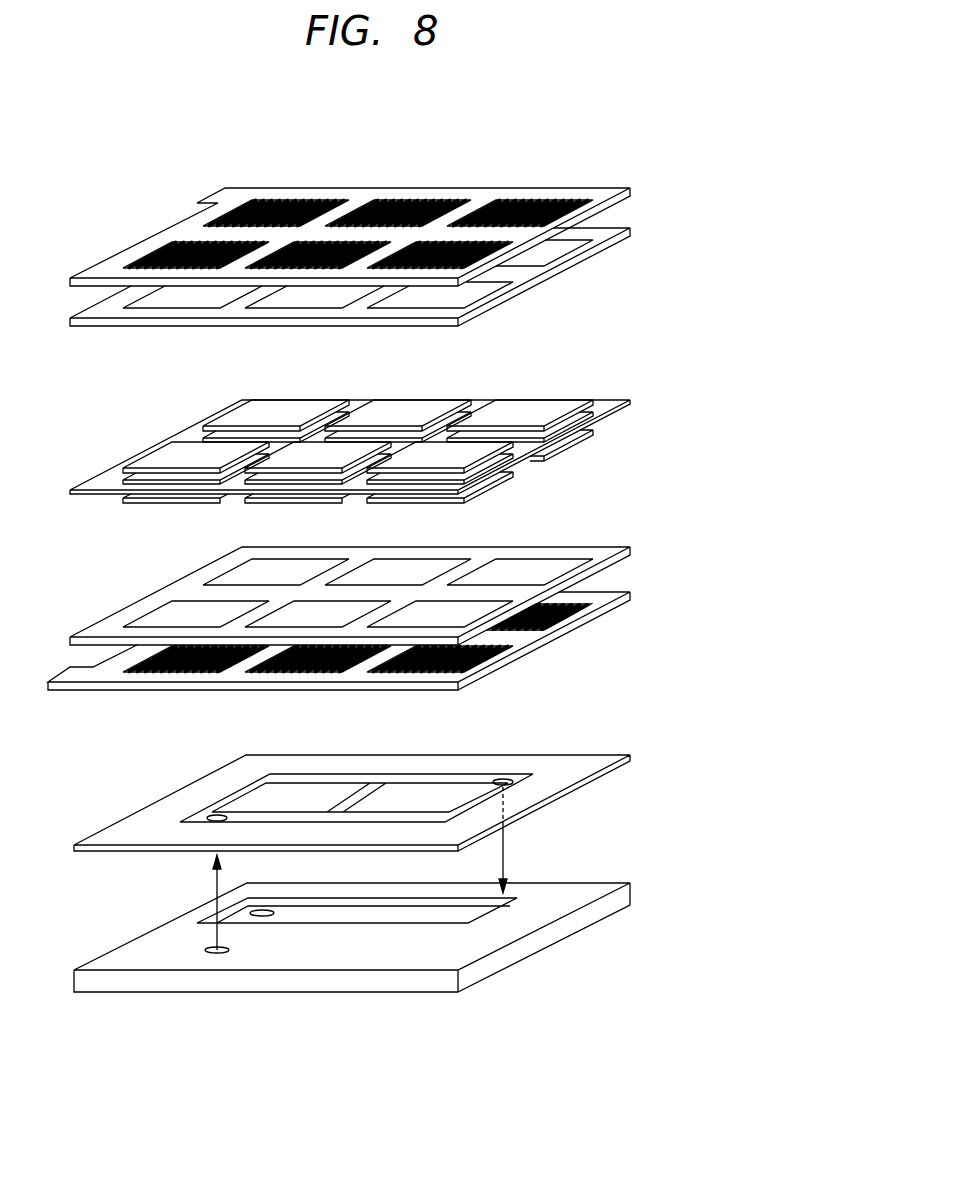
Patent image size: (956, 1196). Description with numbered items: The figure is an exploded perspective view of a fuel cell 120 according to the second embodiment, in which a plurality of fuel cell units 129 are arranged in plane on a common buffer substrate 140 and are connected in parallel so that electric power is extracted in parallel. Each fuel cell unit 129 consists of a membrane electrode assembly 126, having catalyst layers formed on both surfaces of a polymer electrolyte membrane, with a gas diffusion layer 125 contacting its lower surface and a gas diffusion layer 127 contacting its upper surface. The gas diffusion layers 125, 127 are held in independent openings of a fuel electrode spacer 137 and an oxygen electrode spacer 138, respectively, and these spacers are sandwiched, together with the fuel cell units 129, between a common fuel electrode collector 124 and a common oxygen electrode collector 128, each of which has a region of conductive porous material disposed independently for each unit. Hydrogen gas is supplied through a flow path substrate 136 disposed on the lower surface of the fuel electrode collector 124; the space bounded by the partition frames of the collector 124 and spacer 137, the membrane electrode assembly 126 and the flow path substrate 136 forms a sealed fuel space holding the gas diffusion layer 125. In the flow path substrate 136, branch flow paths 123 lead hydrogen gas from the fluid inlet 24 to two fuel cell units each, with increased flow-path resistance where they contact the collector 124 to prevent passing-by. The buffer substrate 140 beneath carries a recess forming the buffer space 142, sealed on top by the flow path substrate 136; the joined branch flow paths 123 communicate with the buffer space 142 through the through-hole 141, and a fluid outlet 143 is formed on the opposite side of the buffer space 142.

The fluid inlet 24 is at (210, 945).
The fuel cell 120 is at (541, 160).
The branch flow paths 123 is at (512, 790).
The fuel electrode collector 124 is at (630, 590).
The gas diffusion layer 125 is at (558, 452).
The membrane electrode assembly 126 is at (630, 400).
The gas diffusion layer 127 is at (540, 405).
The oxygen electrode collector 128 is at (630, 188).
The fuel cell units 129 is at (715, 350).
The flow path substrate 136 is at (632, 755).
The fuel electrode spacer 137 is at (630, 547).
The oxygen electrode spacer 138 is at (630, 230).
The buffer substrate 140 is at (565, 937).
The through-hole 141 is at (520, 775).
The buffer space 142 is at (445, 913).
The fluid outlet 143 is at (258, 910).